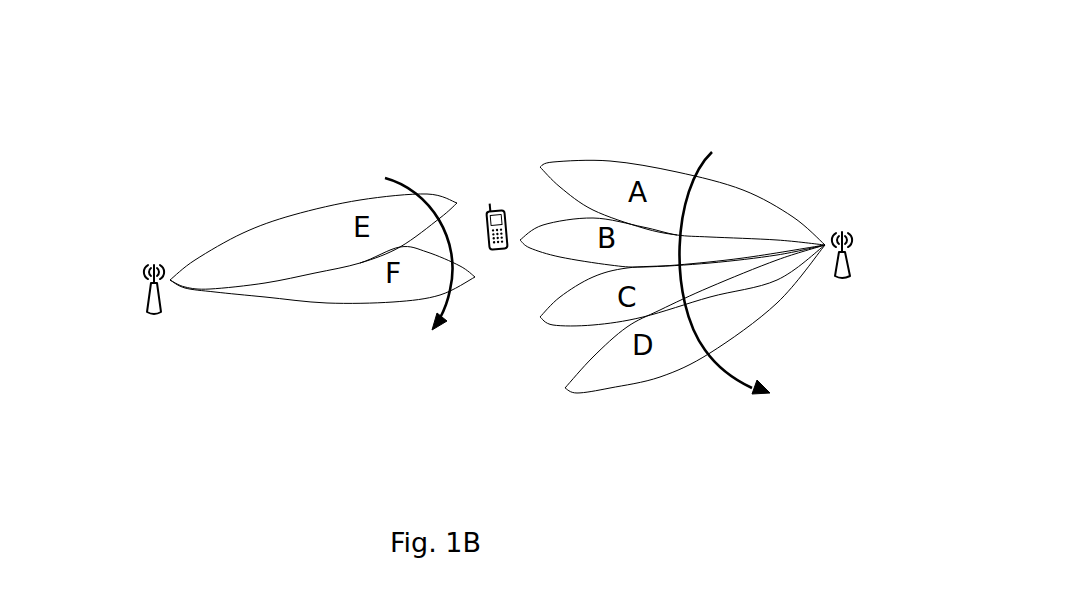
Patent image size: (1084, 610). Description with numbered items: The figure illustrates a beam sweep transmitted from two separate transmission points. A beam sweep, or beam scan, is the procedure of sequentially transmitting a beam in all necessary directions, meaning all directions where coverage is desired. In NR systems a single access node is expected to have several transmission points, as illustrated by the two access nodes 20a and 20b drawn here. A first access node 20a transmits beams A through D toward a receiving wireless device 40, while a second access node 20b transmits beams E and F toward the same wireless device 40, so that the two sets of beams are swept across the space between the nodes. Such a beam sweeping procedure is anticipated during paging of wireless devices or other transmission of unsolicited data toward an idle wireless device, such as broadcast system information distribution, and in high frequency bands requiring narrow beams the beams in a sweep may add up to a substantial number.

The first access node 20a is at (150, 298).
The second access node 20b is at (850, 262).
The mobile device / user equipment 40 is at (487, 215).